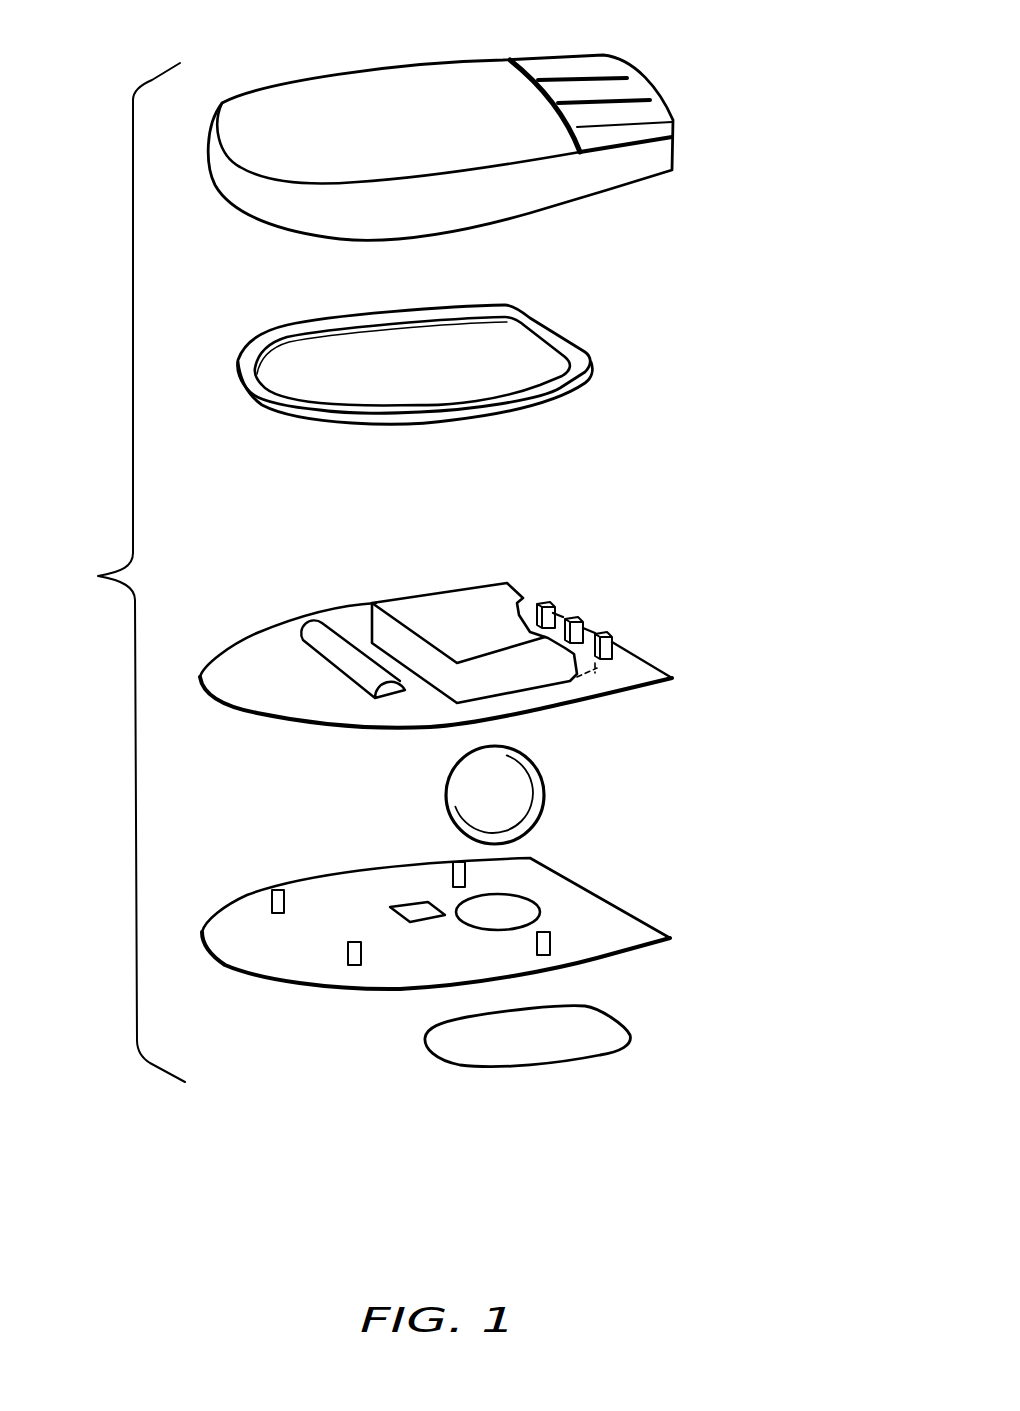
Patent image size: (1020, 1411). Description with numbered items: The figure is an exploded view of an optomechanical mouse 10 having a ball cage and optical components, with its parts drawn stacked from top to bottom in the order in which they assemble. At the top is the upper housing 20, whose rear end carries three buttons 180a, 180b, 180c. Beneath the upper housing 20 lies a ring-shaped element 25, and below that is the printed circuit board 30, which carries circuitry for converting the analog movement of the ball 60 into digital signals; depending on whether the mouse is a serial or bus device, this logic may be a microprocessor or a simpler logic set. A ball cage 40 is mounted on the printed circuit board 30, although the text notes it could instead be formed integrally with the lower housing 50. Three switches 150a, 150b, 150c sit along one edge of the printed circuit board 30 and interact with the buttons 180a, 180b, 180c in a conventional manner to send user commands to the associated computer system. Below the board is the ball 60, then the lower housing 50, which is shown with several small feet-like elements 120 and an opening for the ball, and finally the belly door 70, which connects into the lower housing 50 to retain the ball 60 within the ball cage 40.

The optomechanical mouse 10 is at (443, 543).
The upper housing 20 is at (573, 197).
The gasket 25 is at (565, 340).
The printed circuit board 30 is at (670, 675).
The ball cage 40 is at (445, 605).
The lower housing 50 is at (598, 893).
The ball 60 is at (518, 780).
The belly door 70 is at (612, 1017).
The feet 120 is at (278, 892).
The switch 150a is at (543, 600).
The switch 150b is at (570, 620).
The switch 150c is at (603, 633).
The button 180a is at (600, 62).
The button 180b is at (630, 88).
The button 180c is at (647, 108).